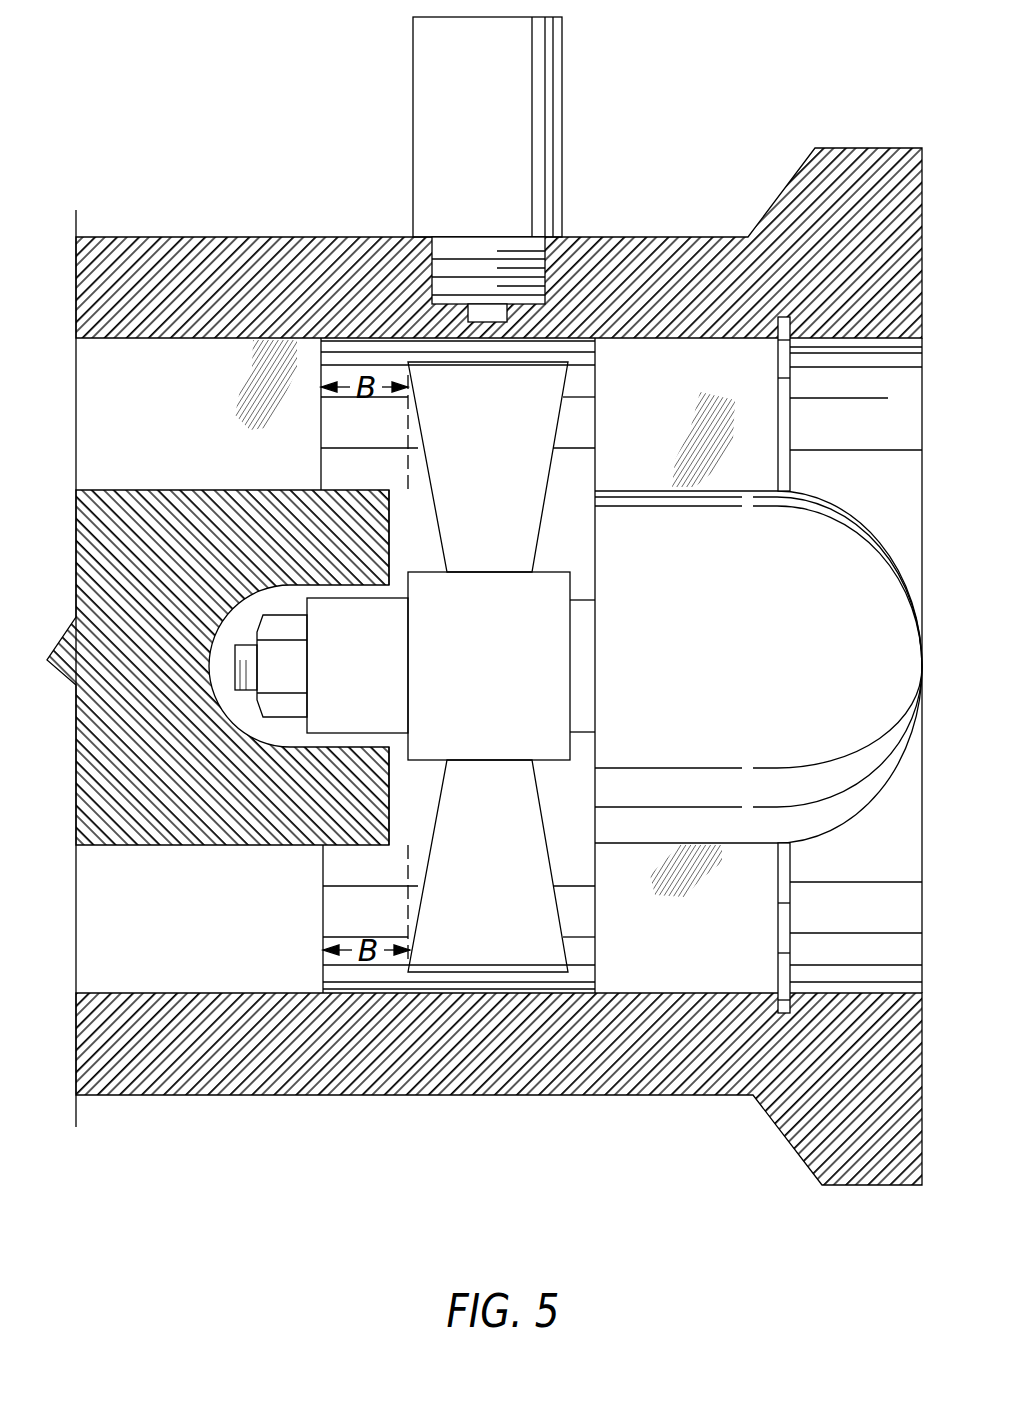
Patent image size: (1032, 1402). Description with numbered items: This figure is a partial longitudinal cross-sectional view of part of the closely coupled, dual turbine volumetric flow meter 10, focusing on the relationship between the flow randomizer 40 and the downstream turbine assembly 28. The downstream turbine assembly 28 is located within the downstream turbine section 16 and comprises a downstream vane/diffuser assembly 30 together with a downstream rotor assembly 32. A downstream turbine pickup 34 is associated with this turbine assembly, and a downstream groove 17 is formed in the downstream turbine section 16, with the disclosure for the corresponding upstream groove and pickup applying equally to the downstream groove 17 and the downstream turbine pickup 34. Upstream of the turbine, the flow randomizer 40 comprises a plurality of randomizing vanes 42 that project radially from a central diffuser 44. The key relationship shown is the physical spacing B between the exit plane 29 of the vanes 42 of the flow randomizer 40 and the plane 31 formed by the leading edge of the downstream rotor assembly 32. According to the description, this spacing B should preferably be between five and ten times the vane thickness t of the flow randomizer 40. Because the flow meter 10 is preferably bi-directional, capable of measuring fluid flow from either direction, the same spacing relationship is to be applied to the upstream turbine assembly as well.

The dual turbine volumetric flow meter 10 is at (252, 78).
The downstream turbine section 16 is at (678, 237).
The downstream groove 17 is at (783, 318).
The downstream turbine assembly 28 is at (835, 458).
The exit plane 29 is at (321, 368).
The downstream vane/diffuser assembly 30 is at (707, 684).
The plane formed by the leading edge of the downstream rotor assembly 31 is at (407, 428).
The downstream rotor assembly 32 is at (471, 468).
The downstream turbine pickup 34 is at (471, 151).
The flow randomizer 40 is at (117, 385).
The randomizing vanes 42 is at (151, 431).
The central diffuser 44 is at (134, 680).